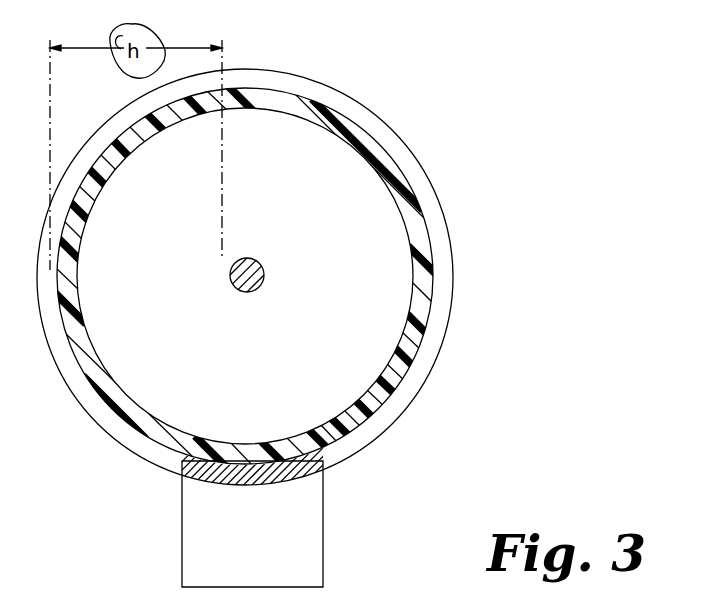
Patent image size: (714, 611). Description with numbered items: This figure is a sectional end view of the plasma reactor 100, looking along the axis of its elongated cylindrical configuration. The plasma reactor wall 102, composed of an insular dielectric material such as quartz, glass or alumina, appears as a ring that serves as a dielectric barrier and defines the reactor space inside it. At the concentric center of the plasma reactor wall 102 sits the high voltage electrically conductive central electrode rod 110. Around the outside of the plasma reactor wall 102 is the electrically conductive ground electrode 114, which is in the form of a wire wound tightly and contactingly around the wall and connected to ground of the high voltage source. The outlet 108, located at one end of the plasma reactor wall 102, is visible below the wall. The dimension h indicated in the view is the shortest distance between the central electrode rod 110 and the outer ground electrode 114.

The plasma reactor 100 is at (470, 257).
The plasma reactor wall 102 is at (417, 190).
The outlet 108 is at (182, 557).
The central electrode rod 110 is at (240, 293).
The ground electrode 114 is at (438, 363).